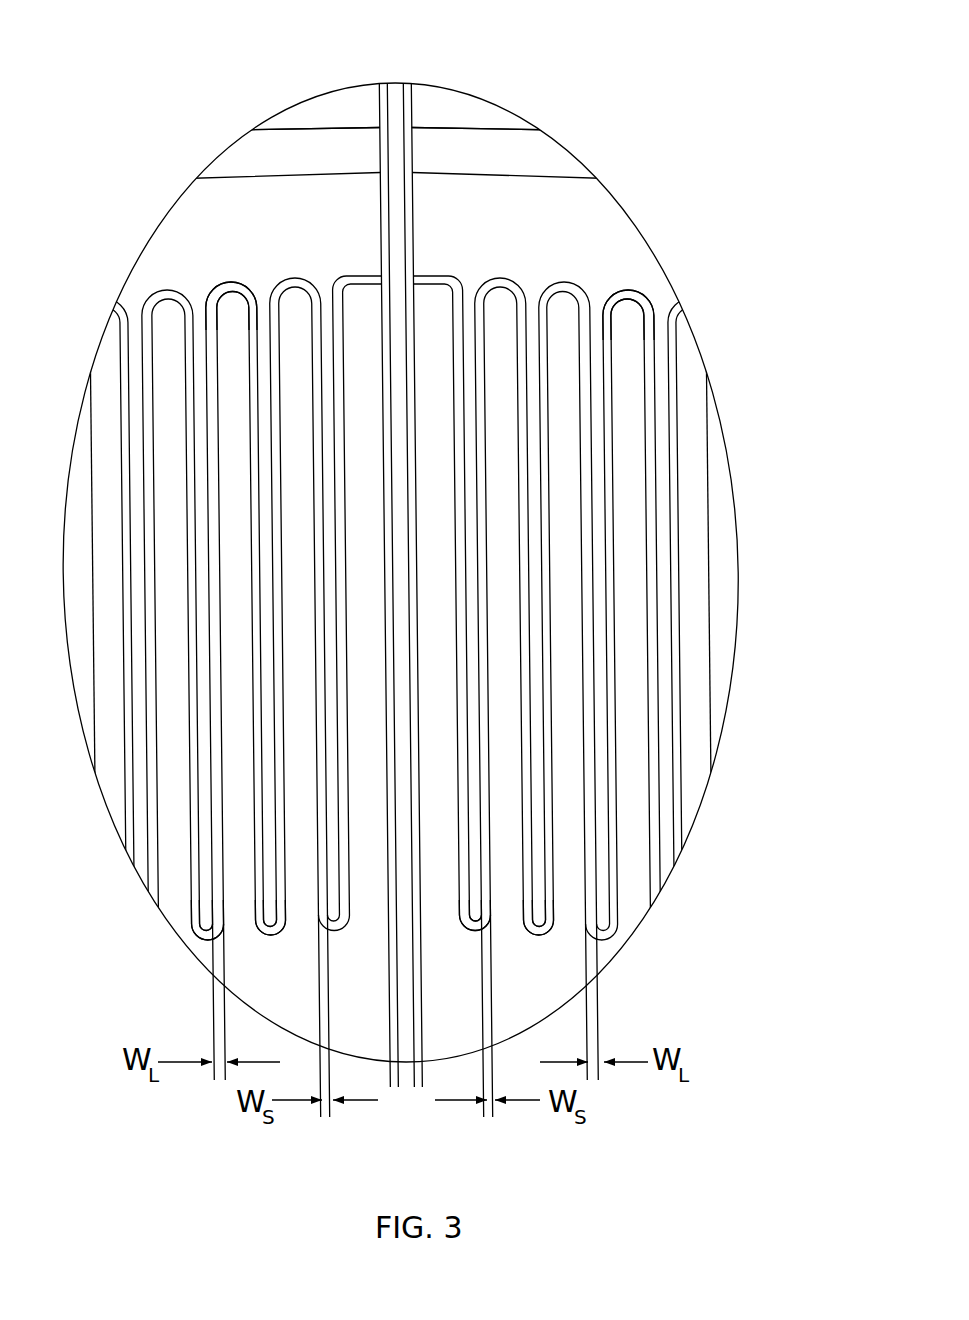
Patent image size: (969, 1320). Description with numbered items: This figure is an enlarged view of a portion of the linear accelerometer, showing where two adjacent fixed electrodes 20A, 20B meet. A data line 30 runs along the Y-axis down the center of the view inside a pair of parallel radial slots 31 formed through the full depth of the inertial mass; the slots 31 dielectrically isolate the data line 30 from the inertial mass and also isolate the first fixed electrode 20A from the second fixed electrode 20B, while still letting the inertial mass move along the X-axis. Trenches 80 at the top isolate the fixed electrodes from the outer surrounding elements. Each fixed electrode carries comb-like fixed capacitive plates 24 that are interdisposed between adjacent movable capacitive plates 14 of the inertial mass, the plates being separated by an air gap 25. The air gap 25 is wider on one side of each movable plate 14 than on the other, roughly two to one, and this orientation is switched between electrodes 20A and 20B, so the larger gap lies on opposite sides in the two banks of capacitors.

The trenches 80 is at (490, 140).
The first fixed electrode 20A is at (192, 217).
The second fixed electrode 20B is at (592, 230).
The fixed capacitive plates 24 is at (259, 300).
The radial slots 31 is at (380, 243).
The data line 30 is at (406, 1072).
The movable capacitive plates 14 is at (173, 900).
The air gap 25 is at (280, 928).